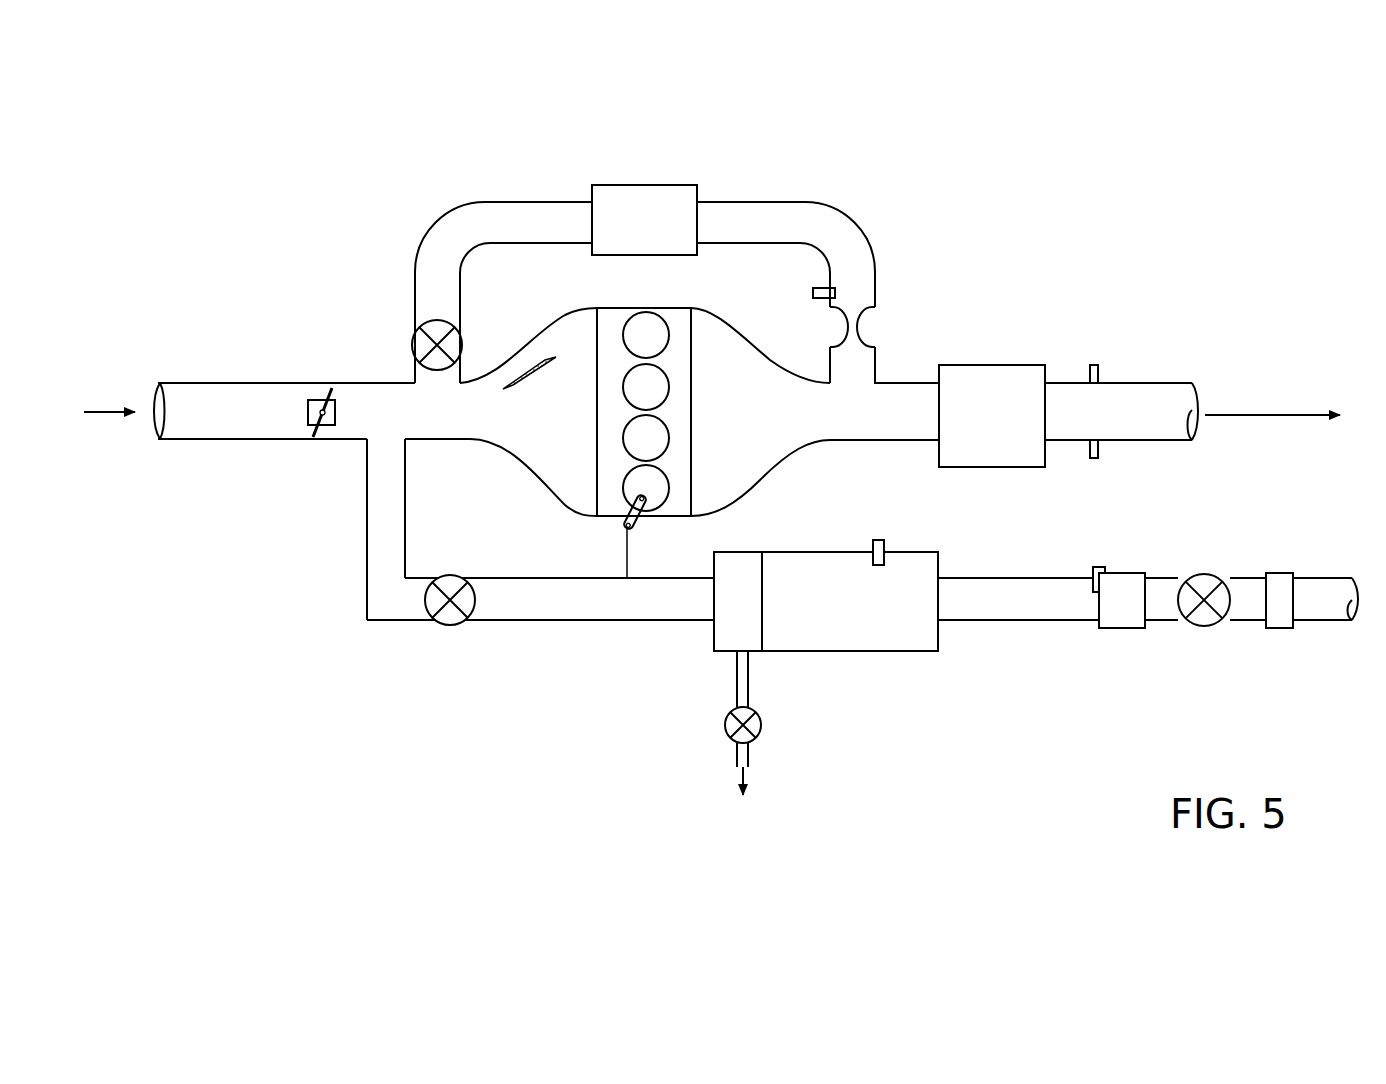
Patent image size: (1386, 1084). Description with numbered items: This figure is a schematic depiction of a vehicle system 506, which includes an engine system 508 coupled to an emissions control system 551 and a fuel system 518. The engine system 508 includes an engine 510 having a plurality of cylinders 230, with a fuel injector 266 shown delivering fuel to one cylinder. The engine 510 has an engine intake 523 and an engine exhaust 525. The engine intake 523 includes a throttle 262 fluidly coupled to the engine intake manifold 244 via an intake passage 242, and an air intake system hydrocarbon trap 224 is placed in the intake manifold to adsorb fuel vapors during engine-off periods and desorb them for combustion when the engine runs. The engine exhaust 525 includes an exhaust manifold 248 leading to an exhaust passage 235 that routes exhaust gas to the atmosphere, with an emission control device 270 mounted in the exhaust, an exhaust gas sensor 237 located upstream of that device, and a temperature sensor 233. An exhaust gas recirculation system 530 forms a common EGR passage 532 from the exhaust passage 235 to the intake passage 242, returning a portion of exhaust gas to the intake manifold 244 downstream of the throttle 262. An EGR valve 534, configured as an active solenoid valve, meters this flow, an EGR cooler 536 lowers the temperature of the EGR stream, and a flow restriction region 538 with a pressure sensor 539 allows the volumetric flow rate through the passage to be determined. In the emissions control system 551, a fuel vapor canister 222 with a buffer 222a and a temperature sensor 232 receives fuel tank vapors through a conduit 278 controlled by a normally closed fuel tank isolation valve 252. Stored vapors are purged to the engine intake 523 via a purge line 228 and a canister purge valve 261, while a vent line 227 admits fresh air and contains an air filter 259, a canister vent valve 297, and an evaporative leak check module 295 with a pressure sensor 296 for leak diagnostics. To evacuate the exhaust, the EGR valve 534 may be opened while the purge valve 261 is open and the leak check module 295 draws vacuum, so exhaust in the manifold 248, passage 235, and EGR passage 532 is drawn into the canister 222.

The vehicle system 506 is at (174, 230).
The engine intake 523 is at (297, 209).
The EGR valve 534 is at (412, 345).
The EGR cooler 536 is at (638, 185).
The exhaust gas recirculation system 530 is at (763, 166).
The EGR passage 532 is at (770, 233).
The engine exhaust 525 is at (957, 219).
The engine system 508 is at (1062, 211).
The flow restriction region 538 is at (862, 327).
The pressure sensor 539 is at (813, 293).
The air intake system hydrocarbon trap 224 is at (521, 362).
The cylinders 230 is at (667, 330).
The engine intake manifold 244 is at (558, 421).
The engine 510 is at (692, 394).
The exhaust manifold 248 is at (778, 421).
The emission control device 270 is at (980, 366).
The exhaust gas sensor 237 is at (1090, 376).
The exhaust passage 235 is at (1143, 383).
The temperature sensor 233 is at (1090, 449).
The throttle 262 is at (335, 416).
The intake passage 242 is at (356, 441).
The canister purge valve 261 is at (450, 576).
The fuel injector 266 is at (634, 523).
The purge line 228 is at (568, 609).
The buffer 222a is at (735, 552).
The temperature sensor 232 is at (877, 540).
The fuel vapor canister 222 is at (938, 571).
The vent line 227 is at (1019, 609).
The pressure sensor 296 is at (1096, 567).
The evaporative leak check module 295 is at (1120, 573).
The canister vent valve 297 is at (1200, 578).
The air filter 259 is at (1283, 573).
The emissions control system 551 is at (1341, 534).
The conduit 278 is at (737, 660).
The fuel tank isolation valve 252 is at (760, 727).
The fuel system 518 is at (846, 774).